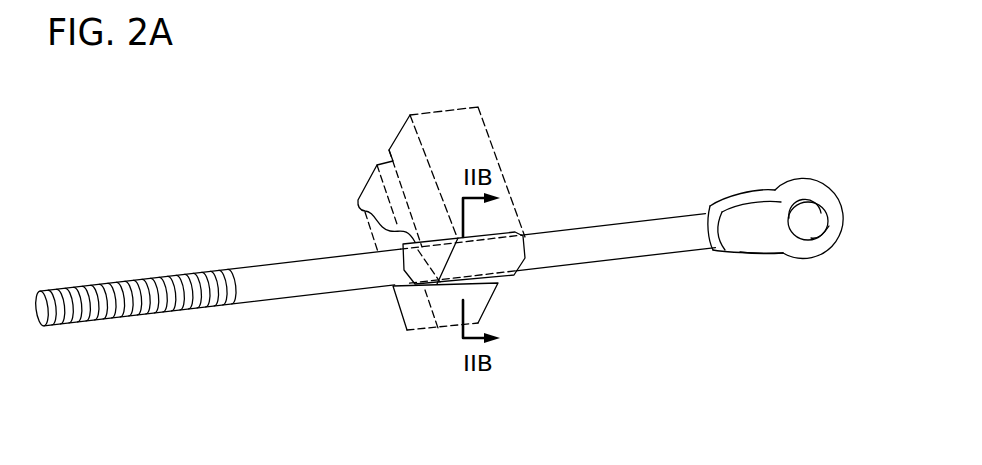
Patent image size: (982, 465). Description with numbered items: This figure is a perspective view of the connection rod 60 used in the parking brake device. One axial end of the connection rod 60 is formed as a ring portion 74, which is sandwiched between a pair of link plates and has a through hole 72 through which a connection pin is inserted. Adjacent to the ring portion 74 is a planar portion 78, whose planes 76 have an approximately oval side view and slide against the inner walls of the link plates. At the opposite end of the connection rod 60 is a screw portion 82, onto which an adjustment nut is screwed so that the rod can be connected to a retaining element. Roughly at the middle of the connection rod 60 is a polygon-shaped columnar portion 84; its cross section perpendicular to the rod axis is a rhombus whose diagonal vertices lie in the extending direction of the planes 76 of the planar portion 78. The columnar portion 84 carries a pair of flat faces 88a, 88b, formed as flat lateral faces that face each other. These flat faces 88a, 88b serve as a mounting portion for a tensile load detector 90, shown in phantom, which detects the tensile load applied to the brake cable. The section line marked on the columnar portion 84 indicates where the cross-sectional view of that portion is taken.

The connection rod 60 is at (560, 227).
The through hole 72 is at (834, 255).
The ring portion 74 is at (821, 198).
The planes 76 is at (755, 232).
The planar portion 78 is at (767, 257).
The screw portion 82 is at (110, 309).
The columnar portion 84 is at (517, 280).
The flat face 88a is at (365, 211).
The flat face 88b is at (418, 292).
The tensile load detector 90 is at (493, 122).